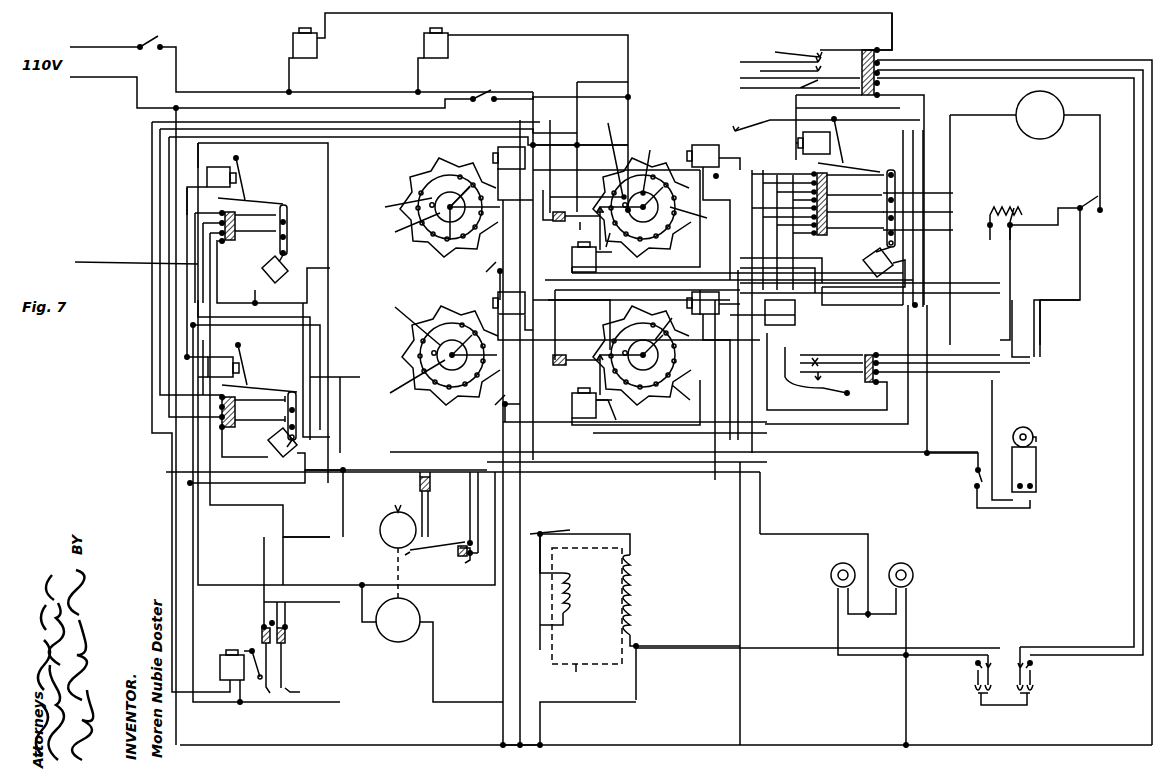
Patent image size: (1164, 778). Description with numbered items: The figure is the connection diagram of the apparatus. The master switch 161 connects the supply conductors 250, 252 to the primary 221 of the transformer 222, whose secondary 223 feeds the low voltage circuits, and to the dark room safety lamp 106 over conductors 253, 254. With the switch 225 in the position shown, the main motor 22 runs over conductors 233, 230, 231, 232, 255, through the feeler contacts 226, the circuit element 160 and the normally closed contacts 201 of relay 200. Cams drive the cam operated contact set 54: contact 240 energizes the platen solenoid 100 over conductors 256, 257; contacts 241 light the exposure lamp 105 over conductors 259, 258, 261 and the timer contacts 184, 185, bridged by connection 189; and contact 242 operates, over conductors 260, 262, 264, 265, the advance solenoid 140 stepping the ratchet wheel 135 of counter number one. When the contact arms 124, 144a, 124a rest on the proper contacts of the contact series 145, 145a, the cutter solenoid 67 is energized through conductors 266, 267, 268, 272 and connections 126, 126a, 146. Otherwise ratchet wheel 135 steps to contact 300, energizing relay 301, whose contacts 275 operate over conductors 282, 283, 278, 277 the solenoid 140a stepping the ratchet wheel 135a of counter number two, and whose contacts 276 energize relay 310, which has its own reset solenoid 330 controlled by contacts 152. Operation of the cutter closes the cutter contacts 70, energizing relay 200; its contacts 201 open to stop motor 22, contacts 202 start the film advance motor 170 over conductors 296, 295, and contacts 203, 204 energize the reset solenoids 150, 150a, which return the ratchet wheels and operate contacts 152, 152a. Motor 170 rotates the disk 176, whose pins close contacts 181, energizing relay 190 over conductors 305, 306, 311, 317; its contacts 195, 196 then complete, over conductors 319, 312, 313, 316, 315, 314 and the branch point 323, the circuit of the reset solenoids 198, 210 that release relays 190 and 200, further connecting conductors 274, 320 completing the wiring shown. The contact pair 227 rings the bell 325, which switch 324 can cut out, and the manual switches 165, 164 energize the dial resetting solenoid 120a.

The motor 22 is at (1048, 132).
The cam operated contact set 54 is at (846, 40).
The cutter solenoid 67 is at (424, 40).
The cutter contacts 70 is at (735, 113).
The platen solenoid 100 is at (292, 40).
The exposure lamp 105 is at (831, 576).
The dark room safety lamp 106 is at (906, 576).
The dial resetting solenoid 120a is at (516, 284).
The contact arm 124 is at (430, 207).
The contact arm 124a is at (446, 352).
The contact arm connection 126 is at (415, 216).
The contact arm connection 126a is at (408, 380).
The ratchet wheel 135 is at (612, 239).
The ratchet wheel 135a is at (619, 410).
The ratchet wheel advance solenoid 140 is at (572, 254).
The ratchet wheel advance solenoid 140a is at (570, 400).
The contact arm 144a is at (655, 384).
The counter contact series 145 is at (666, 228).
The counter contact series 145a is at (642, 352).
The counter contact connection 146 is at (642, 198).
The reset solenoid 150 is at (719, 158).
The reset solenoid 150a is at (739, 366).
The contacts 152 is at (578, 223).
The contacts 152a is at (578, 366).
The motor circuit element 160 is at (1004, 204).
The master switch 161 is at (147, 36).
The manual switch 164 is at (497, 404).
The manual switch 165 is at (490, 266).
The film advance motor 170 is at (395, 642).
The disk 176 is at (382, 536).
The contacts 181 is at (425, 538).
The timer contact 184 is at (972, 672).
The timer contact 185 is at (1030, 672).
The connection 189 is at (1005, 716).
The relay 190 is at (212, 172).
The relay contacts 195 is at (284, 218).
The relay contacts 196 is at (284, 241).
The release solenoid 198 is at (286, 271).
The relay 200 is at (803, 140).
The relay contacts 201 is at (860, 198).
The relay contacts 202 is at (933, 192).
The relay contacts 203 is at (933, 211).
The relay contacts 204 is at (933, 229).
The release solenoid 210 is at (875, 254).
The transformer primary 221 is at (572, 582).
The transformer 222 is at (570, 675).
The transformer secondary 223 is at (614, 584).
The switch 225 is at (1092, 212).
The contacts 226 is at (838, 356).
The contact pair 227 is at (785, 347).
The conductor 230 is at (1034, 320).
The conductor 231 is at (1010, 320).
The conductor 232 is at (946, 288).
The conductor 233 is at (950, 168).
The contact 240 is at (819, 59).
The contacts 241 is at (770, 66).
The contact 242 is at (829, 126).
The supply conductor 250 is at (112, 47).
The supply conductor 252 is at (440, 750).
The conductor 253 is at (775, 534).
The conductor 254 is at (906, 713).
The conductor 255 is at (740, 505).
The conductor 256 is at (660, 14).
The conductor 257 is at (1143, 522).
The conductor 258 is at (918, 60).
The conductor 259 is at (878, 660).
The conductor 260 is at (836, 455).
The conductor 261 is at (1134, 407).
The conductor 262 is at (927, 396).
The conductor 264 is at (924, 122).
The conductor 265 is at (770, 462).
The conductor 266 is at (520, 724).
The conductor 267 is at (579, 325).
The conductor 268 is at (568, 306).
The conductor 272 is at (628, 107).
The conductor 274 is at (858, 110).
The relay contacts 275 is at (272, 693).
The relay contacts 276 is at (297, 647).
The conductor 277 is at (626, 432).
The conductor 278 is at (405, 456).
The conductor 282 is at (570, 462).
The conductor 283 is at (345, 512).
The conductor 295 is at (445, 584).
The conductor 296 is at (795, 315).
The contact 300 is at (606, 149).
The relay 301 is at (220, 664).
The conductor 305 is at (198, 560).
The conductor 306 is at (310, 375).
The relay 310 is at (213, 362).
The conductor 311 is at (328, 302).
The conductor 312 is at (342, 411).
The conductor 313 is at (310, 300).
The conductor 314 is at (550, 582).
The conductor 315 is at (330, 330).
The conductor 316 is at (217, 270).
The conductor 317 is at (193, 532).
The conductor 319 is at (136, 257).
The conductor 320 is at (856, 437).
The branch point 323 is at (274, 287).
The switch 324 is at (975, 468).
The bell 325 is at (1044, 463).
The reset solenoid 330 is at (273, 450).